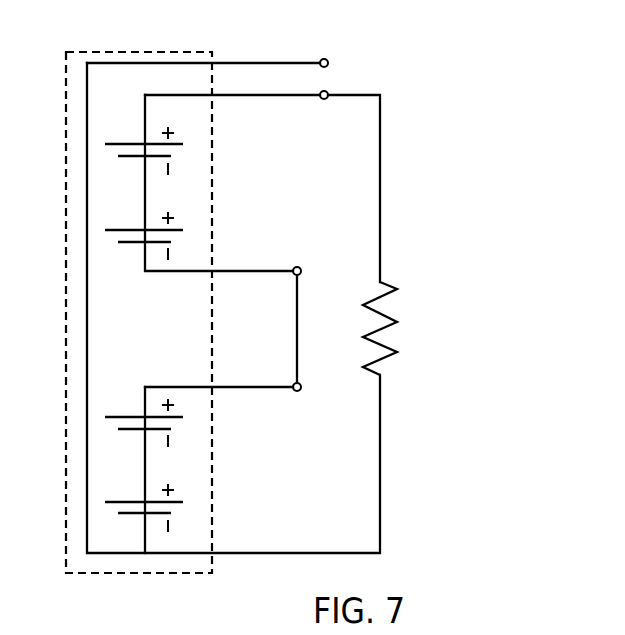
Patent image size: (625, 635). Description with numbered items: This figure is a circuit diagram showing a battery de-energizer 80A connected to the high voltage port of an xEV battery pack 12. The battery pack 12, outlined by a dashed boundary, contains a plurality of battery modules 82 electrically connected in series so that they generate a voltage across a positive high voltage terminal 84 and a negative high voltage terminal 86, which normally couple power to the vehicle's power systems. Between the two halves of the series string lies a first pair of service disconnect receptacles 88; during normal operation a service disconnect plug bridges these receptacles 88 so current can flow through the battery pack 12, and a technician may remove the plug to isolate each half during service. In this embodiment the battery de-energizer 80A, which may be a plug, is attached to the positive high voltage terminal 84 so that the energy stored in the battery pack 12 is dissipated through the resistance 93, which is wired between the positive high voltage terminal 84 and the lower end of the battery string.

The battery pack 12 is at (66, 340).
The battery modules 82 is at (128, 144).
The positive high voltage terminal 84 is at (320, 91).
The negative high voltage terminal 86 is at (320, 59).
The service disconnect receptacles 88 is at (295, 277).
The resistance 93 is at (388, 312).
The battery de-energizer 80A is at (383, 42).